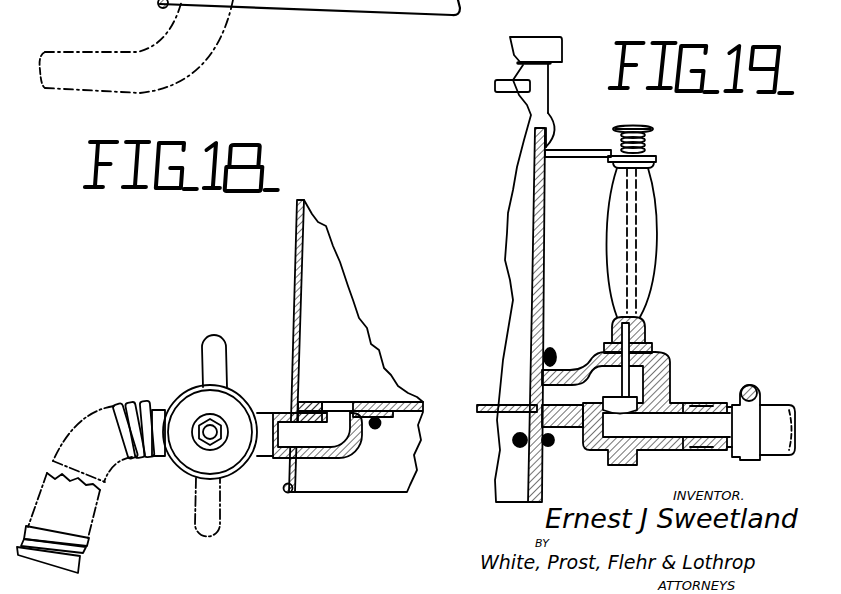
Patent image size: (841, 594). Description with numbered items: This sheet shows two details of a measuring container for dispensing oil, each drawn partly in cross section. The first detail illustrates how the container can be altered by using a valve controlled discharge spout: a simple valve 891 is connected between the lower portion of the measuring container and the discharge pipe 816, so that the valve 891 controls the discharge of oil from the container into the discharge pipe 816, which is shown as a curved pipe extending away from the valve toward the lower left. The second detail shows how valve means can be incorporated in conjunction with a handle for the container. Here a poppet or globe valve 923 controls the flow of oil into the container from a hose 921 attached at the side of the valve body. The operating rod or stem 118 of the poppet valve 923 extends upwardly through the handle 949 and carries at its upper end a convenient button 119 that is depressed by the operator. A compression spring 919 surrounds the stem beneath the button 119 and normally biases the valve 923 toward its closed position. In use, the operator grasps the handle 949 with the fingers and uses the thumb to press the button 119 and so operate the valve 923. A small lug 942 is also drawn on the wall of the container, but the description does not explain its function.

In FIG. 18, the discharge pipe 816 is at (99, 464).
In FIG. 18, the simple valve 891 is at (230, 390).
In FIG. 19, the mounting lug 942 is at (511, 88).
In FIG. 19, the button 119 is at (644, 128).
In FIG. 19, the compression spring 919 is at (648, 143).
In FIG. 19, the handle 949 is at (654, 240).
In FIG. 19, the operating rod or stem 118 is at (645, 333).
In FIG. 19, the poppet or globe valve 923 is at (640, 381).
In FIG. 19, the hose 921 is at (771, 405).